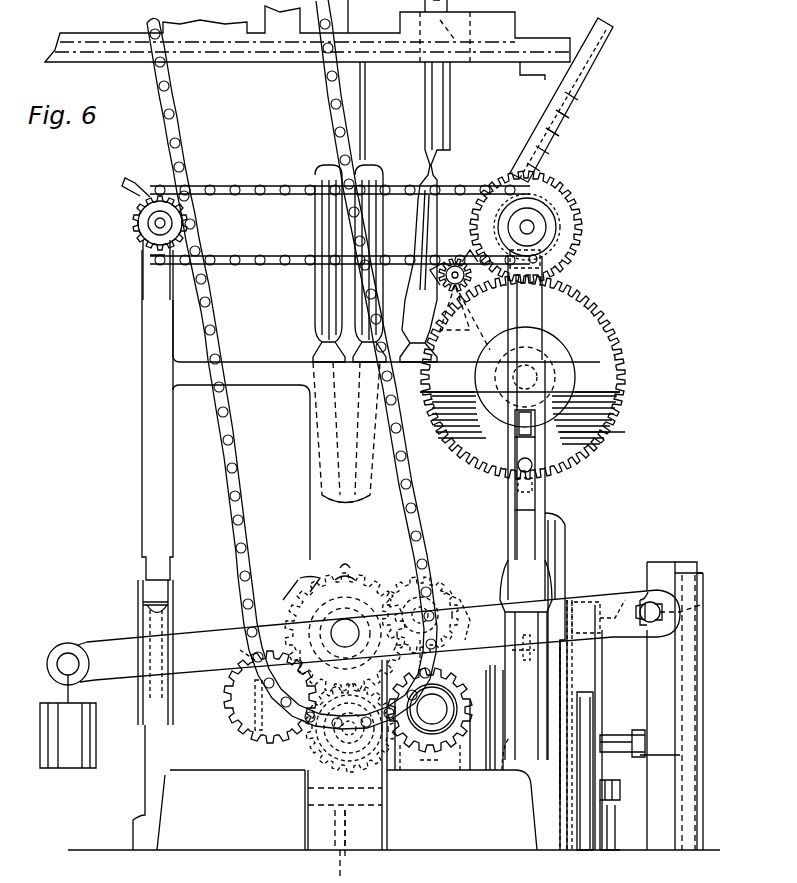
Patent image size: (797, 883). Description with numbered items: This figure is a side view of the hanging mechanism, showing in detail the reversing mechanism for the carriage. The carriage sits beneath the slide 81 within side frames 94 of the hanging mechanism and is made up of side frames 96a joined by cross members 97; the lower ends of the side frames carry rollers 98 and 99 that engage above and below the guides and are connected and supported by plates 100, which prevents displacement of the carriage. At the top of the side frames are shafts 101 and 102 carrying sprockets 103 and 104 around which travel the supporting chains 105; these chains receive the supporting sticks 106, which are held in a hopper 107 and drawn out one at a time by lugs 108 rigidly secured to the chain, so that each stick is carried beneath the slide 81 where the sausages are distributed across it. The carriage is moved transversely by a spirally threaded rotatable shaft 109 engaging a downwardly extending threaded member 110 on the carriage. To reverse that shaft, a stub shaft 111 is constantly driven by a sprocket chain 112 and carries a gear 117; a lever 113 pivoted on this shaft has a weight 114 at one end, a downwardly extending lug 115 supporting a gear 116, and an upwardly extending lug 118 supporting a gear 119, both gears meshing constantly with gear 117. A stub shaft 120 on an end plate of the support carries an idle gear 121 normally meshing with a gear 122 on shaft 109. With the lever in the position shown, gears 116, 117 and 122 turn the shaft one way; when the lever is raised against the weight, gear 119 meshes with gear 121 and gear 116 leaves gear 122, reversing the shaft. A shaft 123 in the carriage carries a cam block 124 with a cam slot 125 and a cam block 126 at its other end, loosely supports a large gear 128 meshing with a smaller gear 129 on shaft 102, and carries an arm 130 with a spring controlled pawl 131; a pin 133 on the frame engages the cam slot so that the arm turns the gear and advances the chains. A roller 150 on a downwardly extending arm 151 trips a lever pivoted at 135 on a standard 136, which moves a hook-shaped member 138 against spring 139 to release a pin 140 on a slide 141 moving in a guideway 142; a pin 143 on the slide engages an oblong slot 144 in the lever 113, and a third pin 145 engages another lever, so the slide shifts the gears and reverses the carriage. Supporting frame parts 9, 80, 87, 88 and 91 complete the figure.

The frame upright 9 is at (350, 10).
The vertical rod 80 is at (452, 70).
The slide 81 is at (258, 30).
The base member 87 is at (282, 866).
The base 88 is at (200, 850).
The base support 91 is at (300, 846).
The side frames 94 is at (540, 507).
The side frames of carriage 96a is at (142, 438).
The cross members 97 is at (248, 362).
The roller 98 is at (526, 660).
The roller 99 is at (500, 770).
The plates 100 is at (140, 610).
The shaft 101 is at (150, 228).
The shaft 102 is at (532, 226).
The sprocket 103 is at (132, 218).
The sprocket 104 is at (547, 206).
The supporting chains 105 is at (248, 184).
The supporting stick 106 is at (368, 170).
The hopper 107 is at (572, 102).
The lugs 108 is at (330, 270).
The spirally threaded rotatable shaft 109 is at (340, 742).
The threaded member 110 is at (325, 507).
The stub shaft 111 is at (340, 633).
The sprocket chain 112 is at (232, 478).
The lever 113 is at (205, 640).
The weight 114 is at (96, 746).
The downwardly extending lug 115 is at (240, 695).
The gear 116 is at (240, 733).
The gear 117 is at (312, 590).
The upwardly extending lug 118 is at (448, 580).
The gear 119 is at (448, 575).
The stub shaft 120 is at (430, 730).
The idle gear 121 is at (462, 760).
The gear 122 is at (392, 780).
The shaft 123 is at (540, 360).
The cam block 124 is at (530, 375).
The cam slot 125 is at (545, 418).
The cam block 126 is at (620, 394).
The large gear 128 is at (620, 355).
The gear 129 is at (570, 245).
The arm 130 is at (458, 300).
The spring controlled pawl 131 is at (462, 290).
The pin 133 is at (612, 434).
The pivot 135 is at (620, 785).
The standard 136 is at (610, 808).
The hook-shaped member 138 is at (596, 672).
The spring 139 is at (570, 760).
The pin 140 is at (640, 604).
The slide 141 is at (660, 565).
The guideway 142 is at (699, 572).
The pin 143 is at (640, 590).
The oblong slot 144 is at (680, 612).
The third pin 145 is at (608, 755).
The roller 150 is at (594, 710).
The downwardly extending arm 151 is at (570, 530).